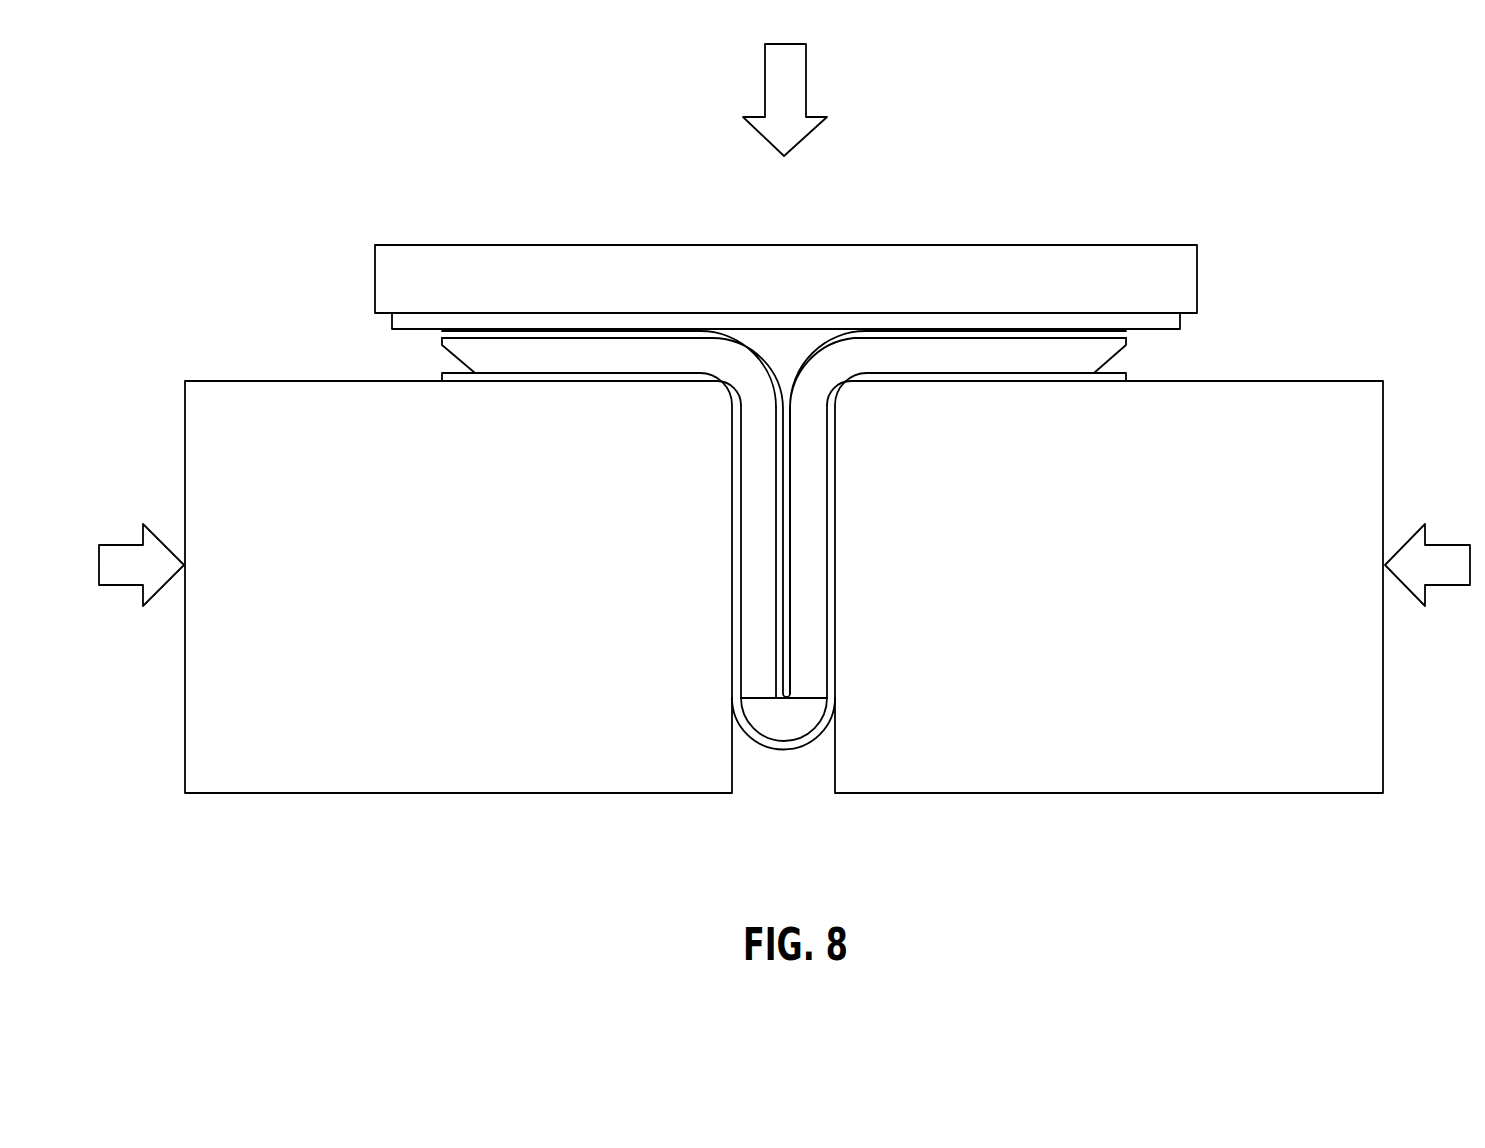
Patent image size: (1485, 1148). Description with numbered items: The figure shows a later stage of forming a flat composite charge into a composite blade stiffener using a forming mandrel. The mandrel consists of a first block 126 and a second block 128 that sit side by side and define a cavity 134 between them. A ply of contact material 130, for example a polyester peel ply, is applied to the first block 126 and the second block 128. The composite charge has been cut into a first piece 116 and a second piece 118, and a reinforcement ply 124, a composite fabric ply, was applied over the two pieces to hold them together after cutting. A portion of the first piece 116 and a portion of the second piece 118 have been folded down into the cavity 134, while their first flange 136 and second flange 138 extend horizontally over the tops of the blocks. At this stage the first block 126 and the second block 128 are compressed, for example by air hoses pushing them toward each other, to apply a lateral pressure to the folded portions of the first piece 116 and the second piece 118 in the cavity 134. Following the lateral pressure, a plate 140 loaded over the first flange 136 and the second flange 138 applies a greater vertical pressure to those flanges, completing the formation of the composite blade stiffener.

The first piece 116 is at (751, 516).
The second piece 118 is at (817, 515).
The reinforcement ply 124 is at (916, 324).
The first block 126 is at (369, 770).
The second block 128 is at (1095, 772).
The ply of contact material 130 is at (434, 372).
The cavity 134 is at (777, 786).
The first flange 136 is at (548, 348).
The second flange 138 is at (1024, 346).
The plate 140 is at (684, 316).